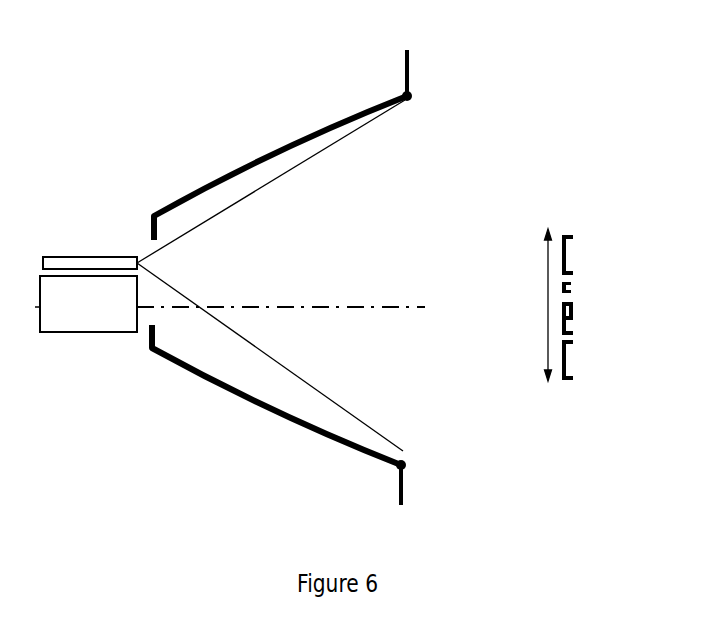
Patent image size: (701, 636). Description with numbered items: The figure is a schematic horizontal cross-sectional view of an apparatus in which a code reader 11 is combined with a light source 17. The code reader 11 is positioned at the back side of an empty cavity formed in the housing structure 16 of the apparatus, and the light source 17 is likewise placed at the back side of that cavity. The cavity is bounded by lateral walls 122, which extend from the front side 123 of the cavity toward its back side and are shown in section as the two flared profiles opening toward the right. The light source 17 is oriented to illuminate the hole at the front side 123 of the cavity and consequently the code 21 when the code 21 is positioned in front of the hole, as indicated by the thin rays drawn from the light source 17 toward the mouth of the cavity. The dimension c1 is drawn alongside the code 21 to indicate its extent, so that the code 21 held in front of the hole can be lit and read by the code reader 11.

The code reader 11 is at (91, 333).
The light source 17 is at (97, 257).
The lateral walls 122 is at (228, 174).
The housing structure 16 is at (408, 57).
The front side 123 is at (483, 448).
The code 21 is at (577, 231).
The width dimension c1 is at (532, 305).